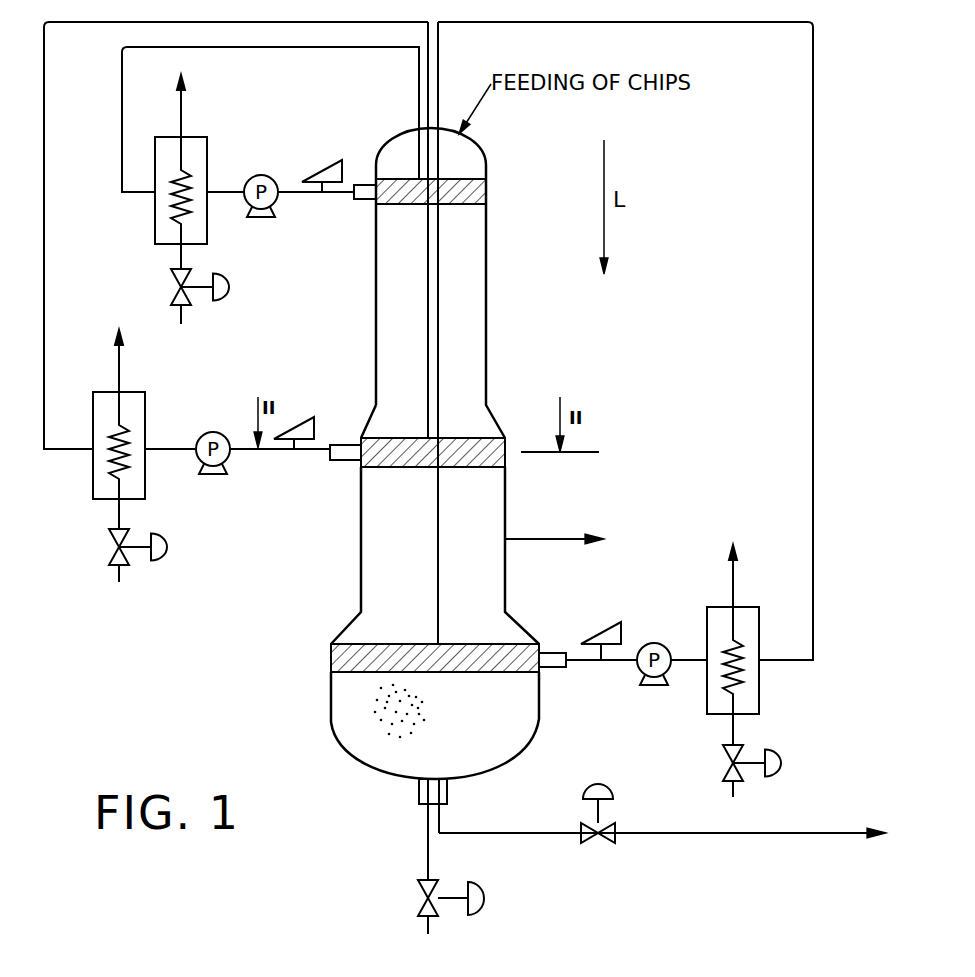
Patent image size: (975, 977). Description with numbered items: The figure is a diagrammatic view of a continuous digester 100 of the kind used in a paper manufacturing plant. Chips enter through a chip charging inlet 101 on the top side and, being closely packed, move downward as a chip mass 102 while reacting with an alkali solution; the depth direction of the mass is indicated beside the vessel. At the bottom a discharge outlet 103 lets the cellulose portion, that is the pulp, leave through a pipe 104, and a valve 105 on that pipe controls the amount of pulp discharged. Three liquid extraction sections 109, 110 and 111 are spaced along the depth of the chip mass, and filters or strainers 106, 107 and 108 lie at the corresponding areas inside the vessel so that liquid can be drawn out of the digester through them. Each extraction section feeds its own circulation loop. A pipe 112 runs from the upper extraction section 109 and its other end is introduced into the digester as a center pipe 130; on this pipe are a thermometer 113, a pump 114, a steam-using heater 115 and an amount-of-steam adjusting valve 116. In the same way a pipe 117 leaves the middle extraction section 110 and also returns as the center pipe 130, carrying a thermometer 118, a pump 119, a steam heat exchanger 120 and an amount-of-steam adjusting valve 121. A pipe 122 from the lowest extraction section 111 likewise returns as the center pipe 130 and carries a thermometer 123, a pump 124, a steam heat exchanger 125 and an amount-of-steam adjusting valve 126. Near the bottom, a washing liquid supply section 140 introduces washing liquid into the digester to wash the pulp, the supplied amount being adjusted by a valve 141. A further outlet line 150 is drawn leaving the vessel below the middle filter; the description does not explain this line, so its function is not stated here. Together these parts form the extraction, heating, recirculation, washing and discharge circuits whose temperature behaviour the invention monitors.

The continuous digester 100 is at (485, 281).
The chip charging inlet 101 is at (470, 134).
The chip mass 102 is at (378, 723).
The discharge outlet 103 is at (446, 790).
The pipe 104 is at (535, 833).
The valve 105 is at (607, 812).
The filter (strainer) 106 is at (485, 184).
The filter (strainer) 107 is at (505, 455).
The filter (strainer) 108 is at (464, 682).
The liquid extraction section 109 is at (368, 180).
The liquid extraction section 110 is at (348, 441).
The liquid extraction section 111 is at (548, 650).
The pipe 112 is at (283, 46).
The thermometer 113 is at (316, 158).
The pump 114 is at (278, 192).
The heater 115 is at (154, 221).
The amount-of-steam adjusting valve 116 is at (190, 292).
The pipe 117 is at (44, 258).
The thermometer 118 is at (302, 412).
The pump 119 is at (229, 462).
The heat exchanger 120 is at (93, 463).
The amount-of-steam adjusting valve 121 is at (175, 548).
The pipe 122 is at (812, 500).
The thermometer 123 is at (606, 620).
The pump 124 is at (650, 686).
The heat exchanger 125 is at (758, 686).
The amount-of-steam adjusting valve 126 is at (785, 764).
The center pipe 130 is at (438, 352).
The washing liquid supply section 140 is at (420, 792).
The valve 141 is at (432, 877).
The extraction line 150 is at (568, 537).